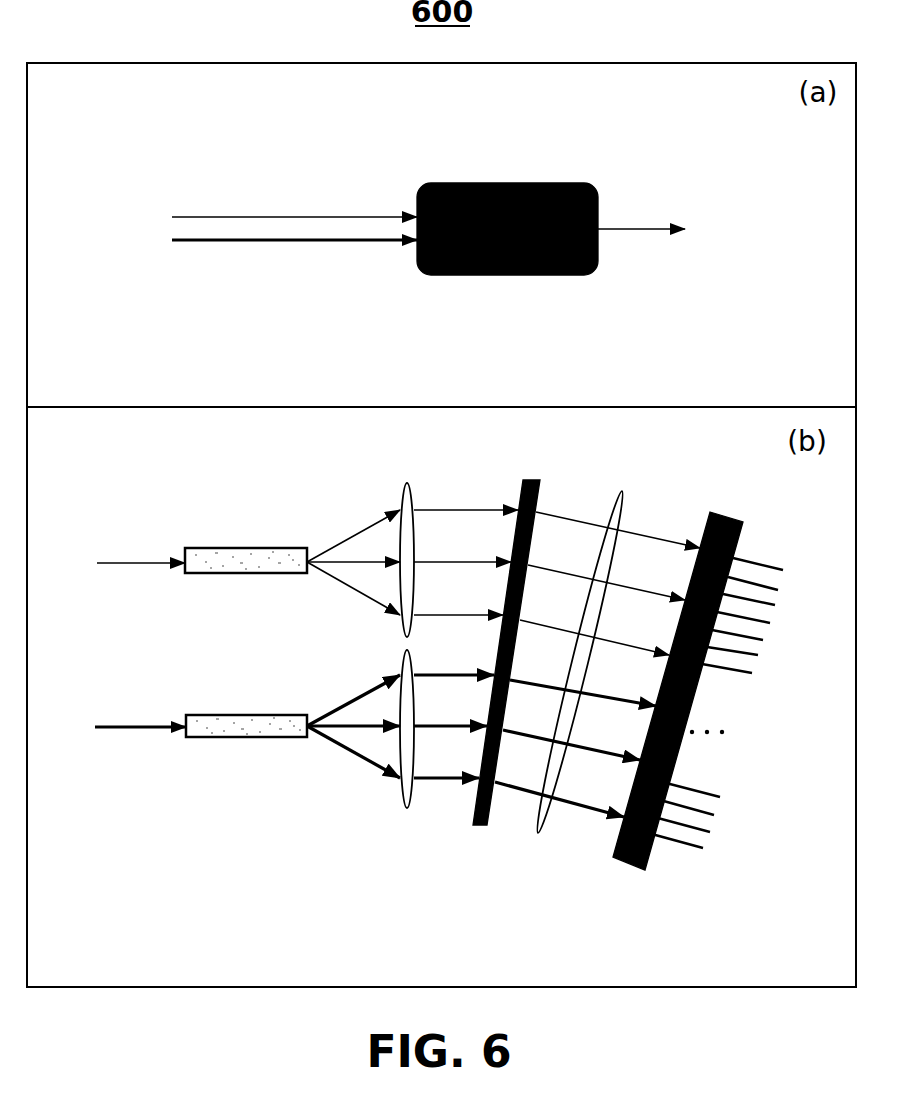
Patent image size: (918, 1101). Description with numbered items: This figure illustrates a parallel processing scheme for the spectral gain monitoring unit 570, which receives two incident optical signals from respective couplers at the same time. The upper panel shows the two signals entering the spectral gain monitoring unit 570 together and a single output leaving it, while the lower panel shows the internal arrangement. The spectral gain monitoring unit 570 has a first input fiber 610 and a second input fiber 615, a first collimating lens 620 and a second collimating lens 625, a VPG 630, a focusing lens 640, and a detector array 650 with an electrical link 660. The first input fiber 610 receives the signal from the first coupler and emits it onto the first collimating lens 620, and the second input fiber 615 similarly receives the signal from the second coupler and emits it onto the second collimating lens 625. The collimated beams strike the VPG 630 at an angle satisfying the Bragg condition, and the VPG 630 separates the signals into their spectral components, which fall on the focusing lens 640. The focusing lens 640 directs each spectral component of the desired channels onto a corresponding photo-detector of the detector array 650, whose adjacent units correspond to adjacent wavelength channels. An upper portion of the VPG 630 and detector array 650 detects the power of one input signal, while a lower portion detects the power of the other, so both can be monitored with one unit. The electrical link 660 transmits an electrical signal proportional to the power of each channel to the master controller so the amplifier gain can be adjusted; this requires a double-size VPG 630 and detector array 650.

The spectral gain monitoring unit 570 is at (551, 247).
The first input fiber 610 is at (252, 563).
The second input fiber 615 is at (243, 722).
The first collimating lens 620 is at (404, 625).
The second collimating lens 625 is at (402, 790).
The VPG 630 is at (470, 817).
The focusing lens 640 is at (538, 815).
The detector array 650 is at (612, 855).
The electrical link 660 is at (675, 837).